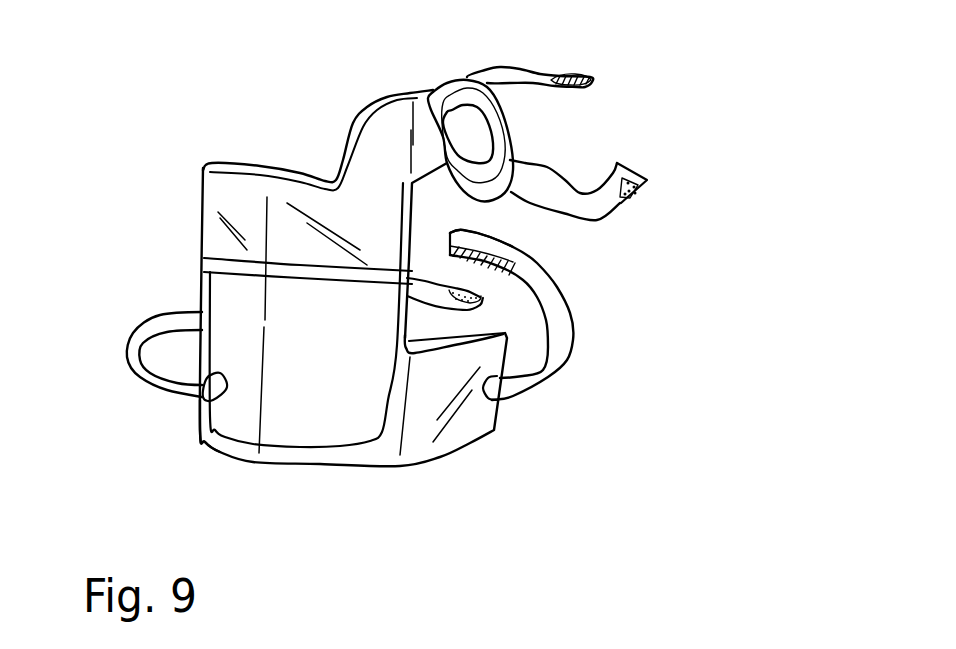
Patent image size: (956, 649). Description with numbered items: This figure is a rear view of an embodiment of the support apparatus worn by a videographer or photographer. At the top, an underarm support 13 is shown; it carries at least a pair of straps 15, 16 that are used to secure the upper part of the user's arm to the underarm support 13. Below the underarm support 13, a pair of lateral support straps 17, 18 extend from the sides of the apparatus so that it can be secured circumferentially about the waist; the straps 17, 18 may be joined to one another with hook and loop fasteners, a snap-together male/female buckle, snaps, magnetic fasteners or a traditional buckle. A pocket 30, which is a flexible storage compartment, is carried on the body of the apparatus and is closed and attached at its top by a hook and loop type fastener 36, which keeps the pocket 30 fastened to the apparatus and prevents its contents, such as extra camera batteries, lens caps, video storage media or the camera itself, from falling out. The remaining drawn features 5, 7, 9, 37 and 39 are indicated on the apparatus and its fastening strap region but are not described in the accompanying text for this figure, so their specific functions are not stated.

The container body 5 is at (313, 457).
The side wall 7 is at (473, 417).
The front wall 9 is at (207, 303).
The underarm support 13 is at (433, 88).
The strap 15 is at (627, 210).
The strap 16 is at (540, 72).
The lateral support strap 17 is at (137, 373).
The lateral support strap 18 is at (573, 333).
The pocket 30 is at (207, 425).
The hook and loop type fastener 36 is at (215, 253).
The tab 37 is at (447, 287).
The hook fastener 39 is at (490, 257).